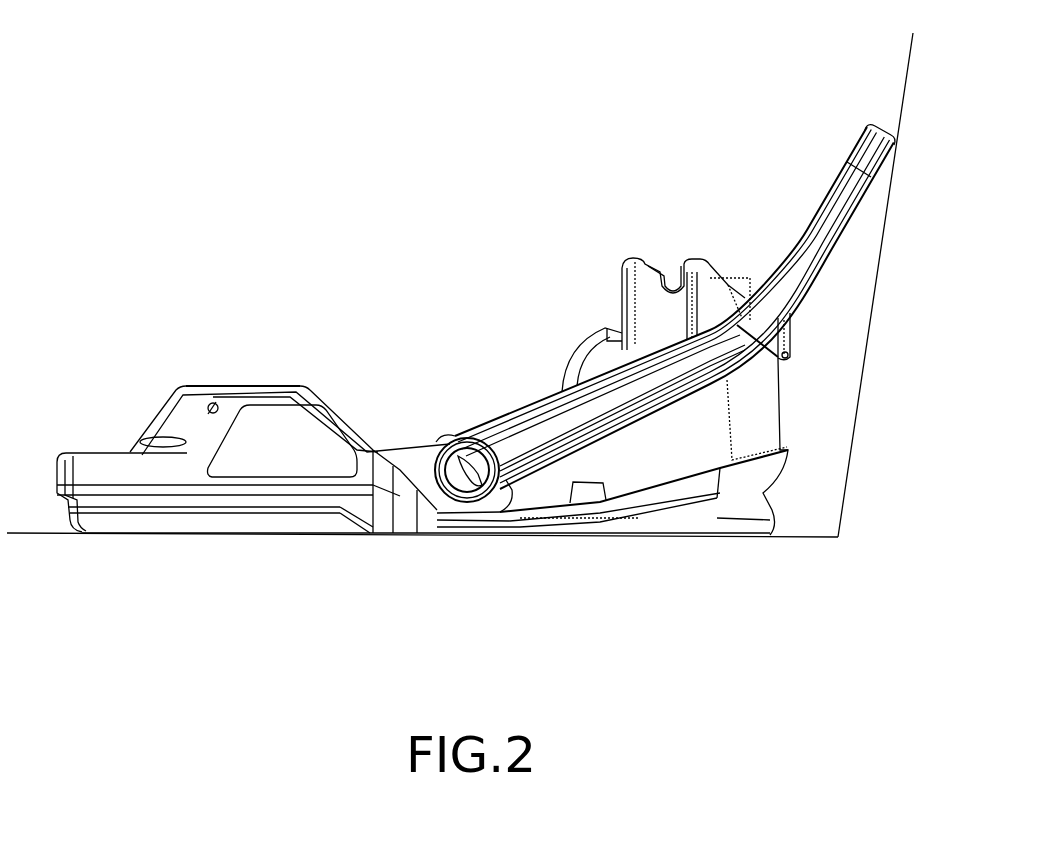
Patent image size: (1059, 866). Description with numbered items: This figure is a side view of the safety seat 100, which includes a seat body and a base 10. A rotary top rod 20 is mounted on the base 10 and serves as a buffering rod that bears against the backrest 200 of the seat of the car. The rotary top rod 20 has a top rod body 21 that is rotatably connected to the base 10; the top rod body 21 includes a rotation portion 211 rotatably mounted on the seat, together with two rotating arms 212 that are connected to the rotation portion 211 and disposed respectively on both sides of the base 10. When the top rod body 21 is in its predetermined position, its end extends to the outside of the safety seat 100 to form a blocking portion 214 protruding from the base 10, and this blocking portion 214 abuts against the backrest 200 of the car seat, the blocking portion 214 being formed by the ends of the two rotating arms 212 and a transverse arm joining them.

The safety seat 100 is at (100, 52).
The base 10 is at (258, 452).
The rotary top rod 20 is at (787, 366).
The top rod body 21 is at (572, 378).
The rotation portion 211 is at (452, 440).
The rotating arm 212 is at (690, 360).
The blocking portion 214 is at (820, 250).
The backrest 200 is at (838, 537).